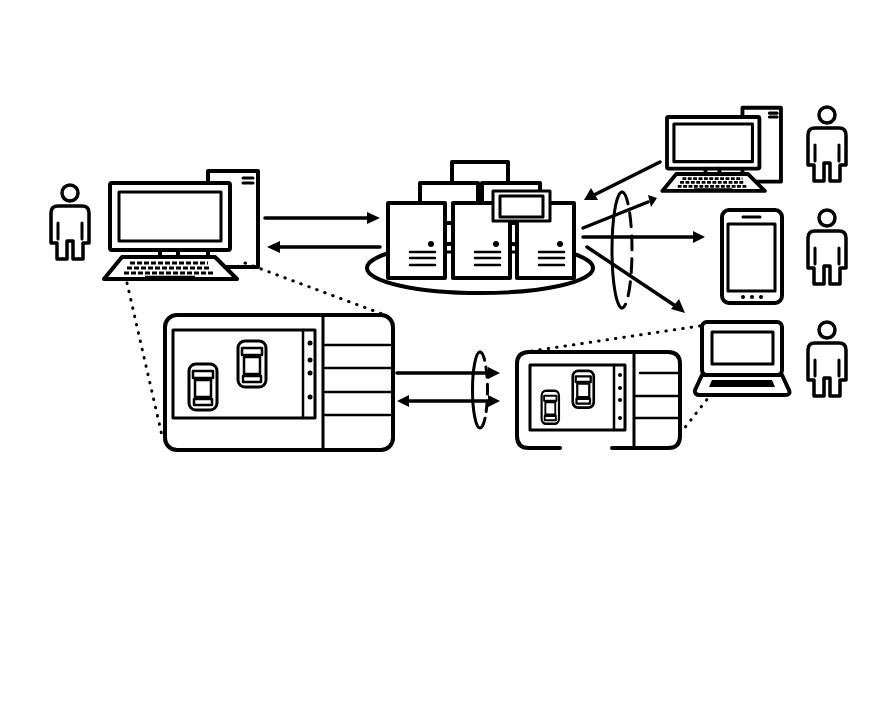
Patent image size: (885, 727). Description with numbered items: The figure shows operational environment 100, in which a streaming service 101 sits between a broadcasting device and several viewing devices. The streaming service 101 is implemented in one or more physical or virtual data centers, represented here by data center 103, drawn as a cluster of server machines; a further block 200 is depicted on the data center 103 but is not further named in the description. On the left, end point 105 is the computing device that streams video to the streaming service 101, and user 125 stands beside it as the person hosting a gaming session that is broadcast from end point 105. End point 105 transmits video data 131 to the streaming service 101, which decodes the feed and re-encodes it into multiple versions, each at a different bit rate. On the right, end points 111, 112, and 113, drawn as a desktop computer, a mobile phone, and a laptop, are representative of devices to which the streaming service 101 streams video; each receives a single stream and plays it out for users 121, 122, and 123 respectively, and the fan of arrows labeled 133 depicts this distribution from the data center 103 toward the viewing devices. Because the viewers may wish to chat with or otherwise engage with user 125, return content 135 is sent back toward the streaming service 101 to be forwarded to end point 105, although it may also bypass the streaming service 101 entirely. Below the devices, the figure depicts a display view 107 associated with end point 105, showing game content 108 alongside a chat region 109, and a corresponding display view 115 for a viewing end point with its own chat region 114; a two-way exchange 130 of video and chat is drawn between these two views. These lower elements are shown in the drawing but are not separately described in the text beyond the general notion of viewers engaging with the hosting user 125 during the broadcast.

The operational environment 100 is at (81, 45).
The streaming service 101 is at (480, 213).
The data center 103 is at (432, 232).
The video chat module 200 is at (537, 214).
The end point 105 is at (187, 230).
The streamer display interface 107 is at (279, 382).
The video game content 108 is at (183, 424).
The chat window 109 is at (367, 440).
The end point 111 is at (722, 154).
The end point 112 is at (762, 268).
The end point 113 is at (758, 360).
The viewer chat window 114 is at (660, 464).
The viewer display interface 115 is at (598, 418).
The user 121 is at (849, 170).
The user 122 is at (849, 275).
The user 123 is at (849, 385).
The user 125 is at (49, 219).
The video chat connection 130 is at (478, 426).
The video data 131 is at (333, 217).
The stream distribution 133 is at (621, 305).
The return content 135 is at (341, 253).